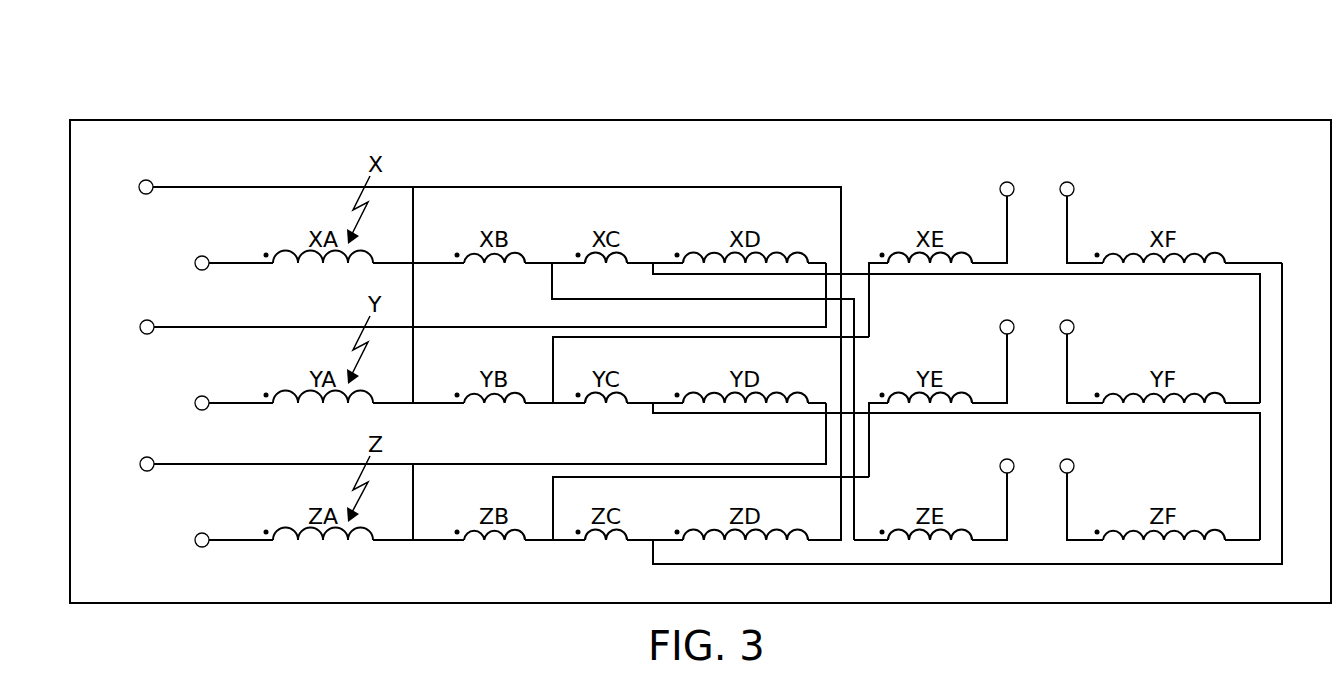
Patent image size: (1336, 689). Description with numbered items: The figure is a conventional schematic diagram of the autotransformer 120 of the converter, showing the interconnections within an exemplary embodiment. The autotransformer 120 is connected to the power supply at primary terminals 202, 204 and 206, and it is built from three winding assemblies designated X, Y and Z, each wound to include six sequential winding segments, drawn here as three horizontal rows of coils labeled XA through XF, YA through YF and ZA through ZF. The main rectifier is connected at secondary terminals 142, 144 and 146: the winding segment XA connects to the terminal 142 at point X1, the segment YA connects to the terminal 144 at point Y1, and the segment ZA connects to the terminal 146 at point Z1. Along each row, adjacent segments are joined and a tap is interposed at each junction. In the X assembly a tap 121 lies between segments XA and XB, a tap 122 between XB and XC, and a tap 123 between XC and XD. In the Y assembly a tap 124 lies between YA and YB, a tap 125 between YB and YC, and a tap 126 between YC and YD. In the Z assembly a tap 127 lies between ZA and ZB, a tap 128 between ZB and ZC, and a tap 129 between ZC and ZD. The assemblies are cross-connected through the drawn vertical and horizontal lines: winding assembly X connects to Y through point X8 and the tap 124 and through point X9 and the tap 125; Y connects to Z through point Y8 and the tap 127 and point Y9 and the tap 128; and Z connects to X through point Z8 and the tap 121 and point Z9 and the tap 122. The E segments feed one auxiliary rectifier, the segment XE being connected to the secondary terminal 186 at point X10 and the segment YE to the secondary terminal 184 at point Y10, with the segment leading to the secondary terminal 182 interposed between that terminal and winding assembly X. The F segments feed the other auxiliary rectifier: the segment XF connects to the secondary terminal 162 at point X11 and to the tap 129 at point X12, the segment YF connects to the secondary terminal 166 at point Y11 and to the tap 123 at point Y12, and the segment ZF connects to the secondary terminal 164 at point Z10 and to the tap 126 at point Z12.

The autotransformer 120 is at (700, 314).
The primary terminal 202 is at (148, 180).
The primary terminal 204 is at (148, 320).
The primary terminal 206 is at (148, 457).
The secondary terminal 142 is at (204, 256).
The secondary terminal 144 is at (204, 396).
The secondary terminal 146 is at (204, 533).
The tap 121 is at (413, 266).
The tap 124 is at (413, 406).
The tap 127 is at (413, 543).
The tap 122 is at (551, 261).
The tap 125 is at (553, 406).
The tap 128 is at (553, 543).
The tap 123 is at (653, 261).
The tap 126 is at (653, 401).
The tap 129 is at (653, 538).
The secondary terminal 186 is at (1000, 183).
The secondary terminal 184 is at (1000, 326).
The secondary terminal 182 is at (1000, 465).
The secondary terminal 162 is at (1073, 183).
The secondary terminal 166 is at (1074, 326).
The secondary terminal 164 is at (1074, 465).